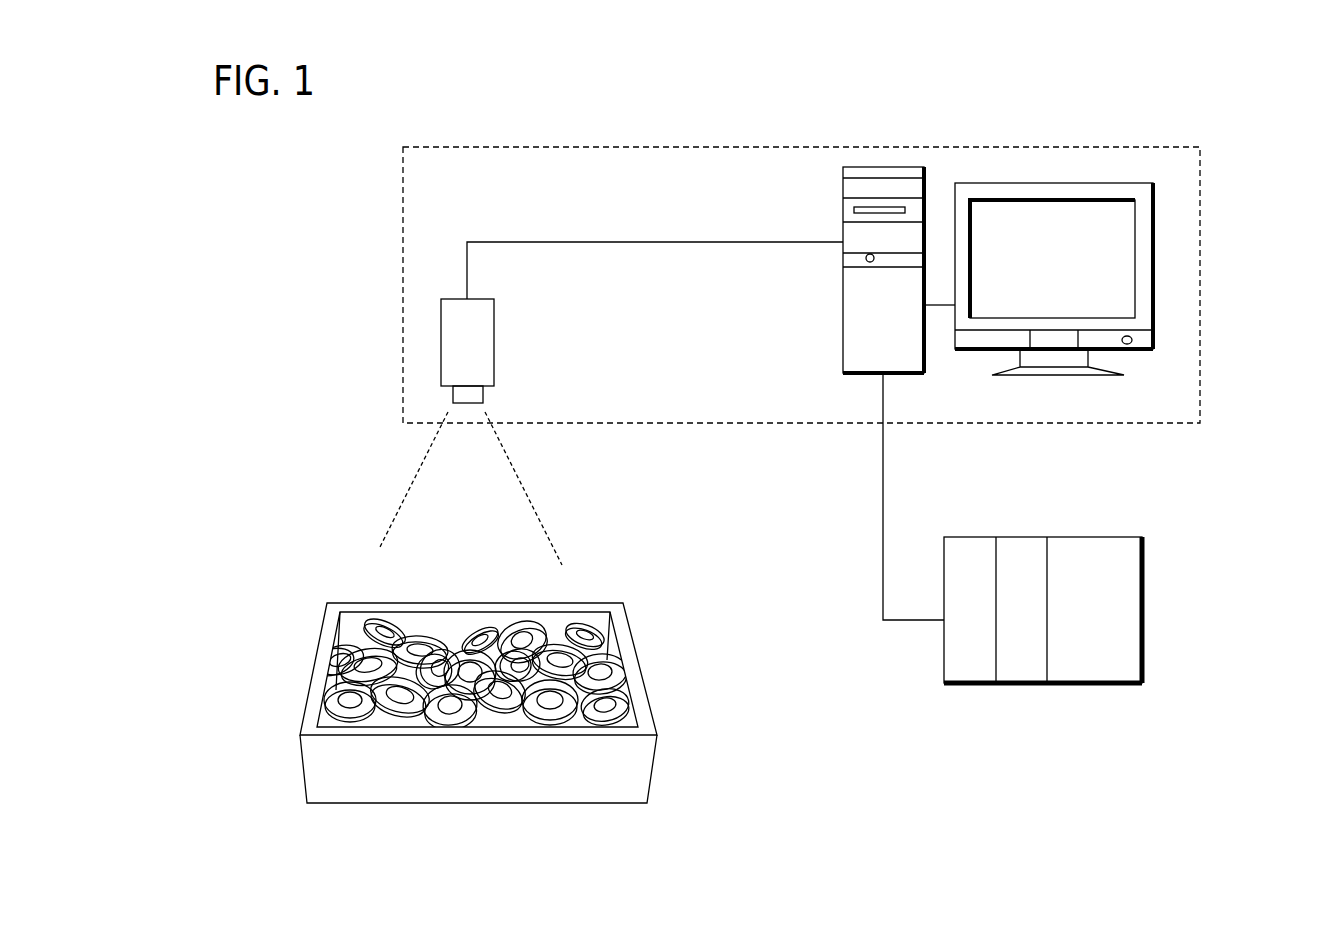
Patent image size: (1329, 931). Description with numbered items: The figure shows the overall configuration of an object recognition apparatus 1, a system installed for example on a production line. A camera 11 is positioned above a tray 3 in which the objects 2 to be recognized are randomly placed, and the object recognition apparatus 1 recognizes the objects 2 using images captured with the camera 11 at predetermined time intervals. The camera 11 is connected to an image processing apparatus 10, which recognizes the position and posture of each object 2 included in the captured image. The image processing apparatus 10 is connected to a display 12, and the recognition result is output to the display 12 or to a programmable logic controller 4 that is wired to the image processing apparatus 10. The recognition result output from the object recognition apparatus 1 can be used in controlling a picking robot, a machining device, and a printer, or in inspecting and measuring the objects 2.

The object recognition apparatus 1 is at (1207, 203).
The objects 2 is at (415, 628).
The tray 3 is at (645, 685).
The programmable logic controller (PLC) 4 is at (1142, 620).
The image processing apparatus 10 is at (843, 213).
The camera 11 is at (494, 337).
The display 12 is at (1153, 298).